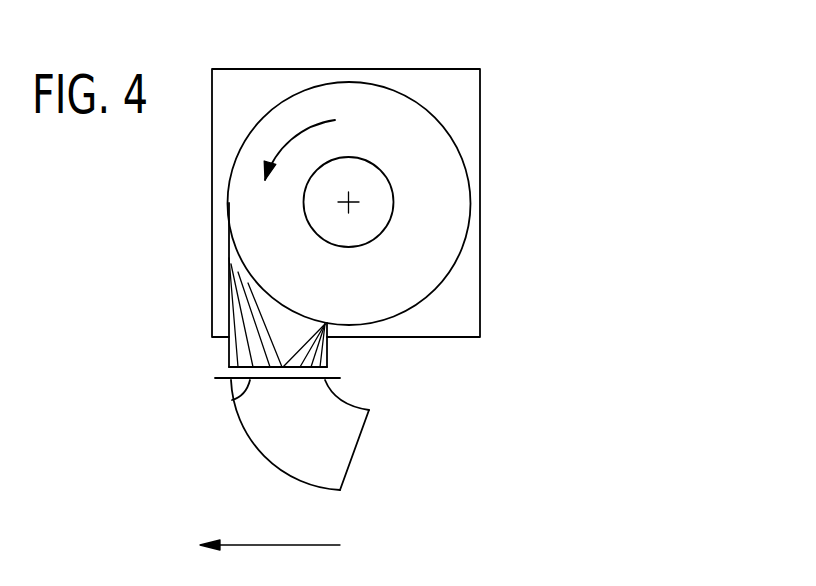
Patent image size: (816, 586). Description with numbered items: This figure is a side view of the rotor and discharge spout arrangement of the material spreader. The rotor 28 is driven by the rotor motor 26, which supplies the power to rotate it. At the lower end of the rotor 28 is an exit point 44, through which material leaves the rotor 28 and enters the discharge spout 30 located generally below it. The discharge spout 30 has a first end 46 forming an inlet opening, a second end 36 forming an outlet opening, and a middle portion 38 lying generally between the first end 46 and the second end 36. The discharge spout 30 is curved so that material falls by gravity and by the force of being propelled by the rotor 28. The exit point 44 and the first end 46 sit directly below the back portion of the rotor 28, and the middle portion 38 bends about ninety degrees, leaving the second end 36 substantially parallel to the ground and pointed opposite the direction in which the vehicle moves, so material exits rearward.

The rotor motor 26 is at (388, 180).
The rotor 28 is at (411, 97).
The discharge spout 30 is at (333, 410).
The second end 36 is at (355, 457).
The middle portion 38 is at (262, 457).
The exit point 44 is at (248, 365).
The first end 46 is at (232, 400).